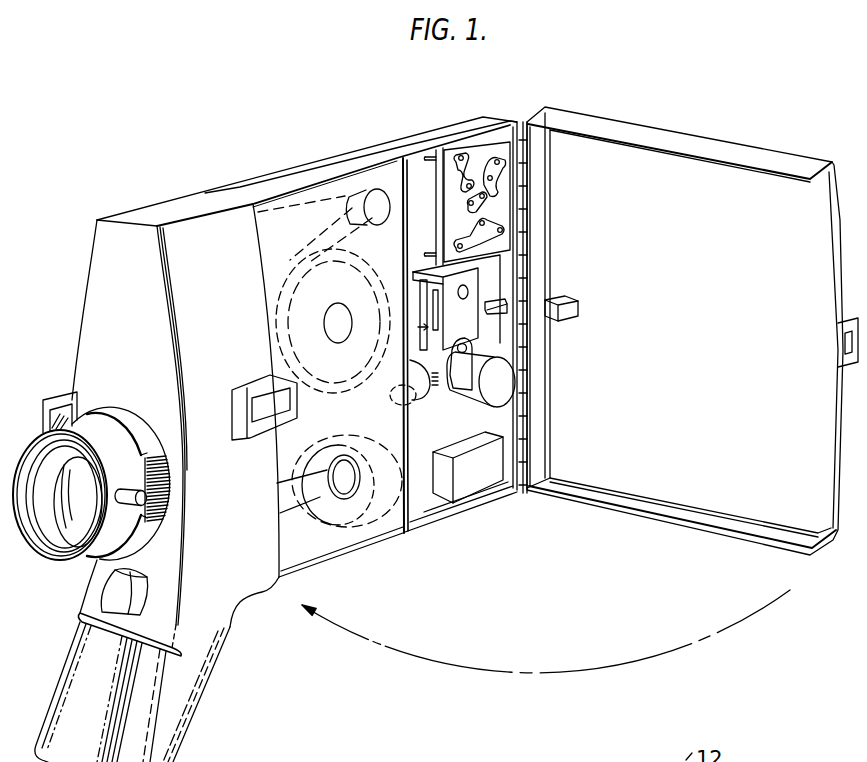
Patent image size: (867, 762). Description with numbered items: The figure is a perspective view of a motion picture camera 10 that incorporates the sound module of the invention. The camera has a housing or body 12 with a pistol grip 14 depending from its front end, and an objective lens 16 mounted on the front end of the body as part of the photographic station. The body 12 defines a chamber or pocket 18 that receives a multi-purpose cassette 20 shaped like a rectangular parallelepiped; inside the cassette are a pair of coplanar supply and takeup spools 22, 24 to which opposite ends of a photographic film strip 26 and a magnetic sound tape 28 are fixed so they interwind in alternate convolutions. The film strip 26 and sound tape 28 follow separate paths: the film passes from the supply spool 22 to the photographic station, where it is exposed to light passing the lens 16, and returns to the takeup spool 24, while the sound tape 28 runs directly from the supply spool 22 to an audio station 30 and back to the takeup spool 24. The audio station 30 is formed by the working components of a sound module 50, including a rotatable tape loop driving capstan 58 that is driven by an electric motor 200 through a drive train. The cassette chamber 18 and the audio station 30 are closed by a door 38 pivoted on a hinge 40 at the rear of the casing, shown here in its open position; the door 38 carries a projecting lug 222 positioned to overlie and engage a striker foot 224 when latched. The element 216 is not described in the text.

The motion picture camera 10 is at (59, 252).
The housing or body 12 is at (404, 133).
The pistol grip 14 is at (180, 693).
The objective lens 16 is at (52, 560).
The chamber or pocket 18 is at (417, 495).
The multi-purpose cassette 20 is at (348, 537).
The supply spool 22 is at (318, 280).
The takeup spool 24 is at (315, 508).
The photographic film strip 26 is at (306, 462).
The magnetic sound tape 28 is at (383, 445).
The audio station 30 is at (420, 245).
The door 38 is at (703, 278).
The hinge 40 is at (524, 192).
The sound module 50 is at (497, 283).
The tape loop driving capstan 58 is at (438, 390).
The electric motor 200 is at (504, 388).
The trigger 216 is at (140, 598).
The projecting lug 222 is at (515, 309).
The striker foot 224 is at (493, 314).